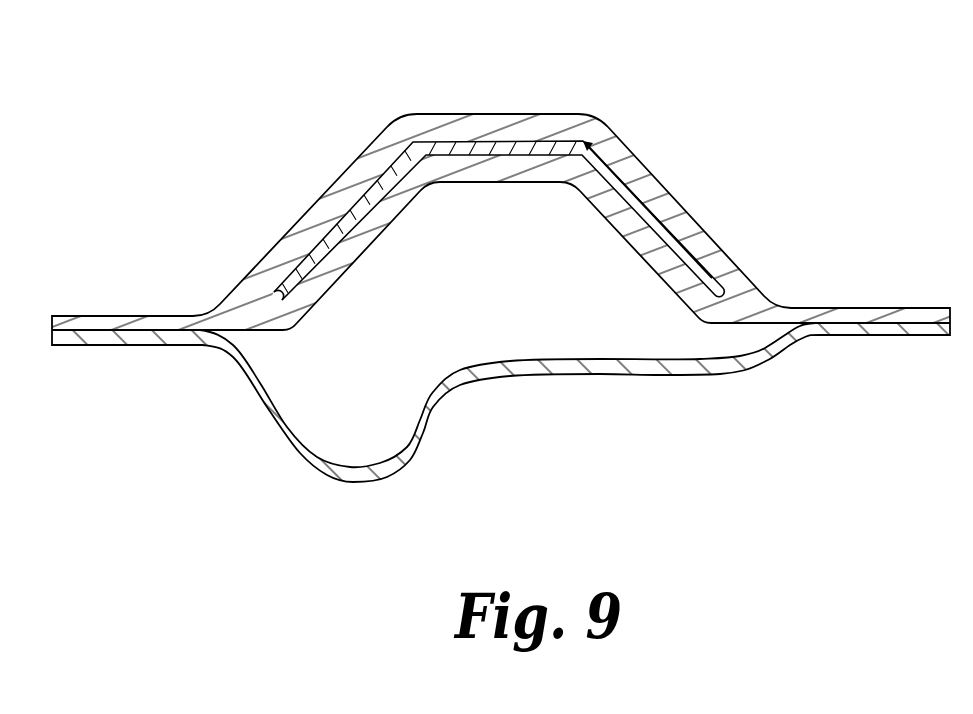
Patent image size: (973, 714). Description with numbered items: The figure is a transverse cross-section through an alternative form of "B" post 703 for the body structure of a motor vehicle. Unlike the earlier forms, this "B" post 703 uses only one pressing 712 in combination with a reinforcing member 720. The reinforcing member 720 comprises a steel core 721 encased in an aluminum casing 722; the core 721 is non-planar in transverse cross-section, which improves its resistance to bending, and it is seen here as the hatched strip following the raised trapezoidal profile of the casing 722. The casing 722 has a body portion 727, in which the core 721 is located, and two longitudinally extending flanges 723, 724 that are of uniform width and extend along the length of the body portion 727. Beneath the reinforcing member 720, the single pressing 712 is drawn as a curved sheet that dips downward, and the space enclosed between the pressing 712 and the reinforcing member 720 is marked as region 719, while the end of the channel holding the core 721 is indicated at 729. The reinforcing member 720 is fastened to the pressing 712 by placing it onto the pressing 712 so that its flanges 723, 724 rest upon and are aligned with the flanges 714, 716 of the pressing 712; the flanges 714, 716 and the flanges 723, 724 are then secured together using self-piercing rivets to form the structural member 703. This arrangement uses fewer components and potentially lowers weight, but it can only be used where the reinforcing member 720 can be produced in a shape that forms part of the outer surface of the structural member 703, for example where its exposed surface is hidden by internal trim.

The "B" post 703 is at (306, 143).
The reinforcing member 720 is at (412, 104).
The steel core 721 is at (512, 142).
The aluminum casing 722 is at (665, 182).
The body portion 727 is at (630, 143).
The flange 724 is at (823, 308).
The flange 723 is at (175, 315).
The interior cavity 719 is at (517, 277).
The slot end 729 is at (303, 272).
The pressing 712 is at (463, 382).
The flange 714 is at (140, 345).
The flange 716 is at (870, 337).